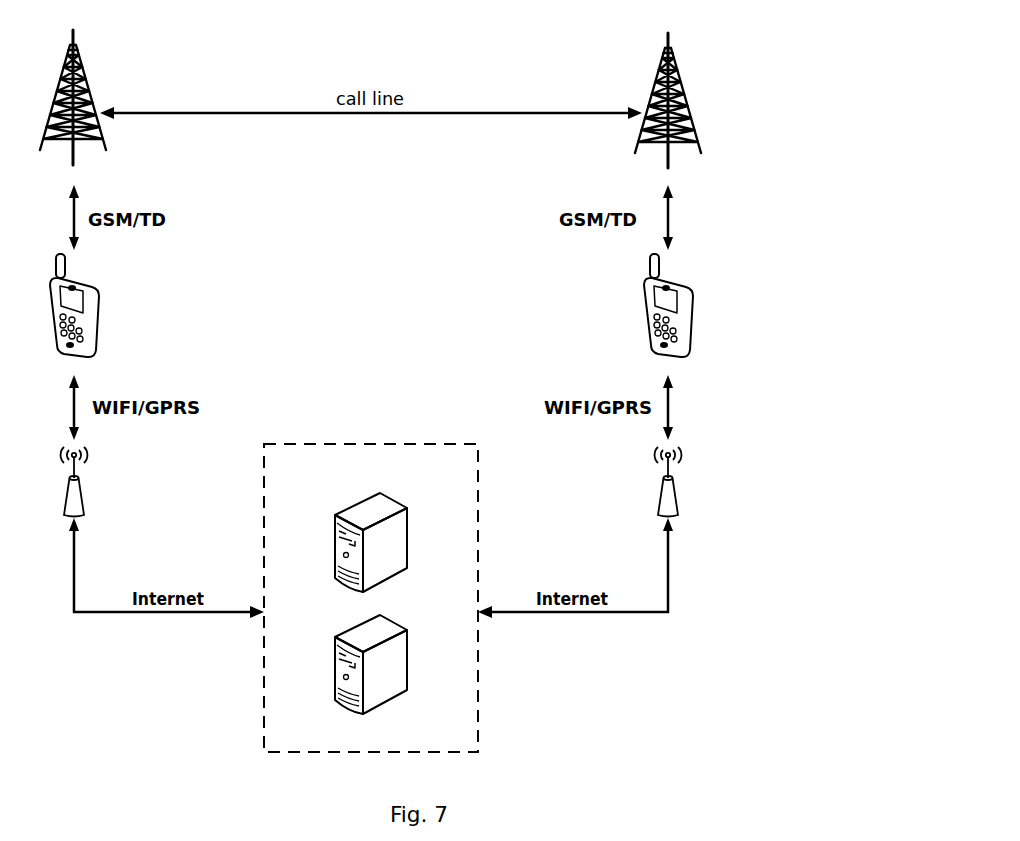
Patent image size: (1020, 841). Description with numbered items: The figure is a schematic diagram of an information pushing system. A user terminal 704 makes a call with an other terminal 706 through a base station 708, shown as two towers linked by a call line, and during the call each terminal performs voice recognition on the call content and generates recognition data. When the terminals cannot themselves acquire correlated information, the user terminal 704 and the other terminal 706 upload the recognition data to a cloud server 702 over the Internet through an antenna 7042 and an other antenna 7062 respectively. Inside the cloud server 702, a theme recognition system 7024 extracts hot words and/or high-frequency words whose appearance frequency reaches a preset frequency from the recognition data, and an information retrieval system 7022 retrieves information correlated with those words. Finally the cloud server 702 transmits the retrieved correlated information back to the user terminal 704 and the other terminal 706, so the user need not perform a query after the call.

The base station 708 is at (645, 88).
The user terminal 704 is at (100, 325).
The other terminal 706 is at (695, 320).
The antenna 7042 is at (82, 496).
The other antenna 7062 is at (678, 500).
The cloud server 702 is at (481, 601).
The information retrieval system 7022 is at (579, 428).
The theme recognition system 7024 is at (407, 683).